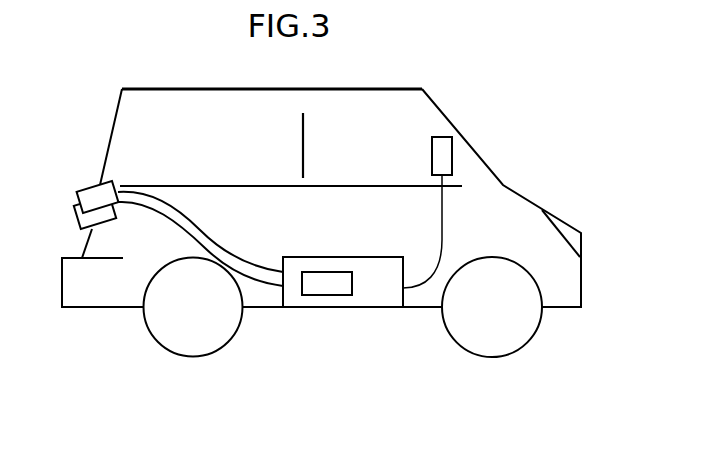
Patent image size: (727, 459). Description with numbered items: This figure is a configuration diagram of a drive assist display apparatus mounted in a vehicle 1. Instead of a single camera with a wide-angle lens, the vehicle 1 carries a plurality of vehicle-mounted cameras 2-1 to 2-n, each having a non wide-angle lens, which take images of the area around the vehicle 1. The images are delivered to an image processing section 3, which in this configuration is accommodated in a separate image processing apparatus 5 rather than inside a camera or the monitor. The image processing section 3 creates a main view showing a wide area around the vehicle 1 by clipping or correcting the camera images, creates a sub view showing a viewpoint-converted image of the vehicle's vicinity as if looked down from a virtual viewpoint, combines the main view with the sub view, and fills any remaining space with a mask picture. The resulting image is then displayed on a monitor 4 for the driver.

The vehicle 1 is at (520, 210).
The vehicle-mounted camera 2-1 is at (73, 210).
The vehicle-mounted camera 2-n is at (92, 193).
The image processing section 3 is at (325, 283).
The monitor 4 is at (443, 137).
The image processing apparatus 5 is at (373, 283).